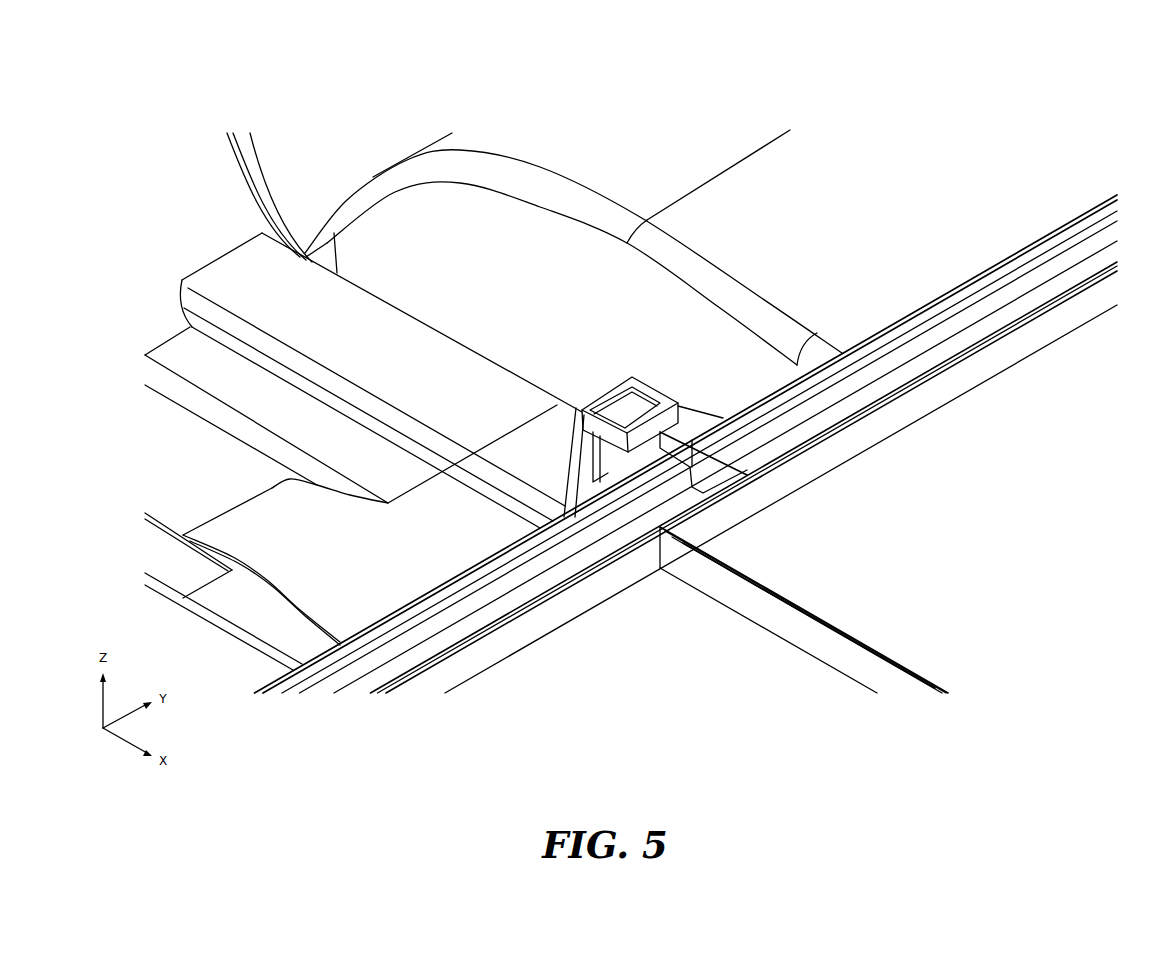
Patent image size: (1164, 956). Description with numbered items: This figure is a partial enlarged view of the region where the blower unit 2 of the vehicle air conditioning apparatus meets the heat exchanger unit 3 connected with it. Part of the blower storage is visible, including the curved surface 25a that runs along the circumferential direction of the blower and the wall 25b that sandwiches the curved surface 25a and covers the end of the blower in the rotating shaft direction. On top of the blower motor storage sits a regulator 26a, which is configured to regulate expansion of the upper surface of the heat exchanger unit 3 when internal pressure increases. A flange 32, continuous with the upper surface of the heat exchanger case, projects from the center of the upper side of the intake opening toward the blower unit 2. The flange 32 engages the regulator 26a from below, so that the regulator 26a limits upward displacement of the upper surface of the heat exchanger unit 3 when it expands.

The blower unit 2 is at (767, 99).
The heat exchanger unit 3 is at (1088, 486).
The curved surface 25a is at (610, 150).
The wall 25b is at (400, 232).
The regulator 26a is at (573, 520).
The flange 32 is at (694, 422).